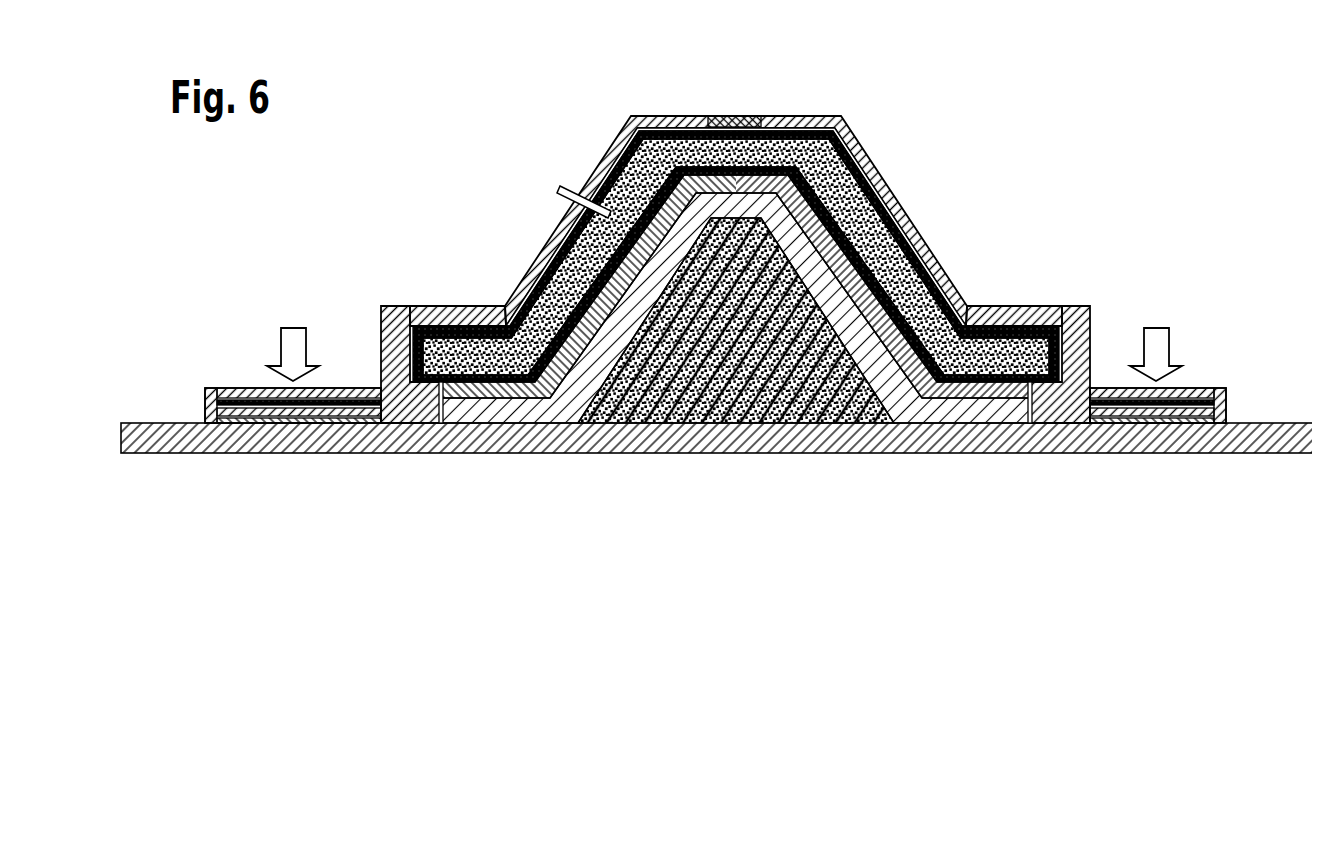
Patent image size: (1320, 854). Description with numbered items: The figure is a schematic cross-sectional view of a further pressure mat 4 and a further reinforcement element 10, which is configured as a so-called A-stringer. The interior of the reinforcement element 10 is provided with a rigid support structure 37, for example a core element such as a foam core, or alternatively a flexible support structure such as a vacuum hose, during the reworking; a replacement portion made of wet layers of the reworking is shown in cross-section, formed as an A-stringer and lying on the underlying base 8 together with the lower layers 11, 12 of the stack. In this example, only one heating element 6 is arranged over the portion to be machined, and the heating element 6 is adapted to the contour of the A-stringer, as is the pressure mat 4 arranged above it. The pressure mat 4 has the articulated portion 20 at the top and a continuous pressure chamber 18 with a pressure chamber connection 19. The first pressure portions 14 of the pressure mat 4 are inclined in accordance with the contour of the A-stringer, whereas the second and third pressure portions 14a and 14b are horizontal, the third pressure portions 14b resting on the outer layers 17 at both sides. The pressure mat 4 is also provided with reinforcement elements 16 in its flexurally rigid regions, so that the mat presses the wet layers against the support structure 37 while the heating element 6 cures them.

The pressure mat 4 is at (362, 300).
The heating element 6 is at (866, 178).
The substrate 8 is at (726, 447).
The reinforcement element 10 is at (502, 415).
The bottom electrode layer 11 is at (502, 415).
The bottom electrode layer 12 is at (502, 415).
The first pressure portions 14 is at (554, 214).
The second pressure portion 14a is at (443, 298).
The third pressure portion 14b is at (244, 380).
The reinforcement elements 16 is at (541, 252).
The bonding layer 17 is at (337, 380).
The pressure chamber 18 is at (645, 162).
The pressure chamber connection 19 is at (577, 182).
The articulated portion 20 is at (731, 108).
The rigid support structure 37 is at (815, 383).